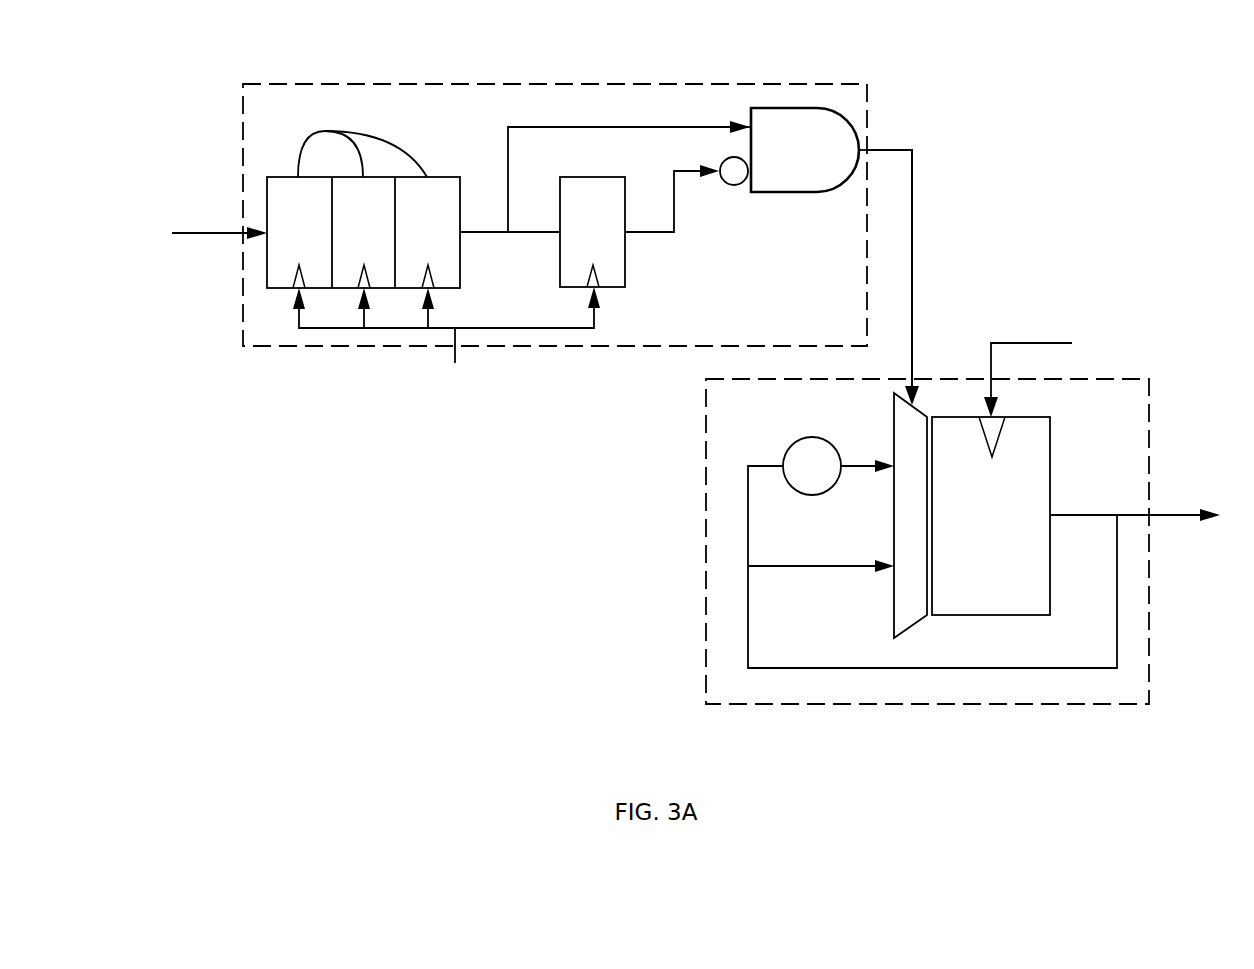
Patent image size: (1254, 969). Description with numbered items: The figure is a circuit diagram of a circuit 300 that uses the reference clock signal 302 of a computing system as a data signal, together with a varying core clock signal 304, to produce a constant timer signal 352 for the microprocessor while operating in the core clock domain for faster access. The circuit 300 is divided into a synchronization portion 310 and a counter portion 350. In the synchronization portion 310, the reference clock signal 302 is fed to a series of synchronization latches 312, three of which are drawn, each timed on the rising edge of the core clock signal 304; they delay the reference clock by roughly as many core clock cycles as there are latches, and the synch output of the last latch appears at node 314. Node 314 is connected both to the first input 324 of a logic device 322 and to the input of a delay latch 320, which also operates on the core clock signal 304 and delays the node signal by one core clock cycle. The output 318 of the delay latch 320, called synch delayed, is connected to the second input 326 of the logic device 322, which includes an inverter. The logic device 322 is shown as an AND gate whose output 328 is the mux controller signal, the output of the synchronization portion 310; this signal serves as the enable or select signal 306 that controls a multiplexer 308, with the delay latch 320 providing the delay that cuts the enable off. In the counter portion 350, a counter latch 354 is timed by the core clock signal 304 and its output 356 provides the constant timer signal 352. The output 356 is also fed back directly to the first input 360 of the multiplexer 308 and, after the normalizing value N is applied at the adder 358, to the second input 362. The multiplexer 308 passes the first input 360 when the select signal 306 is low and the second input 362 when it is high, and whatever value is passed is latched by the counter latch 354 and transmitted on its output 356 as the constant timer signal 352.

The circuit 300 is at (340, 555).
The reference clock signal 302 is at (215, 238).
The core clock signal 304 is at (493, 330).
The enable or select signal 306 is at (912, 215).
The multiplexer 308 is at (893, 443).
The synchronization portion 310 is at (813, 83).
The synchronization latches 312 is at (363, 197).
The node 314 is at (513, 233).
The output of the delay latch 318 is at (660, 232).
The delay latch 320 is at (592, 232).
The logic device 322 is at (812, 192).
The first input 324 is at (769, 125).
The second input 326 is at (756, 171).
The output 328 is at (839, 148).
The counter portion 350 is at (1126, 706).
The constant timer signal 352 is at (1163, 521).
The counter latch 354 is at (991, 516).
The output of the counter latch 356 is at (1053, 513).
The adder 358 is at (787, 492).
The first input 360 is at (882, 575).
The second input 362 is at (882, 470).